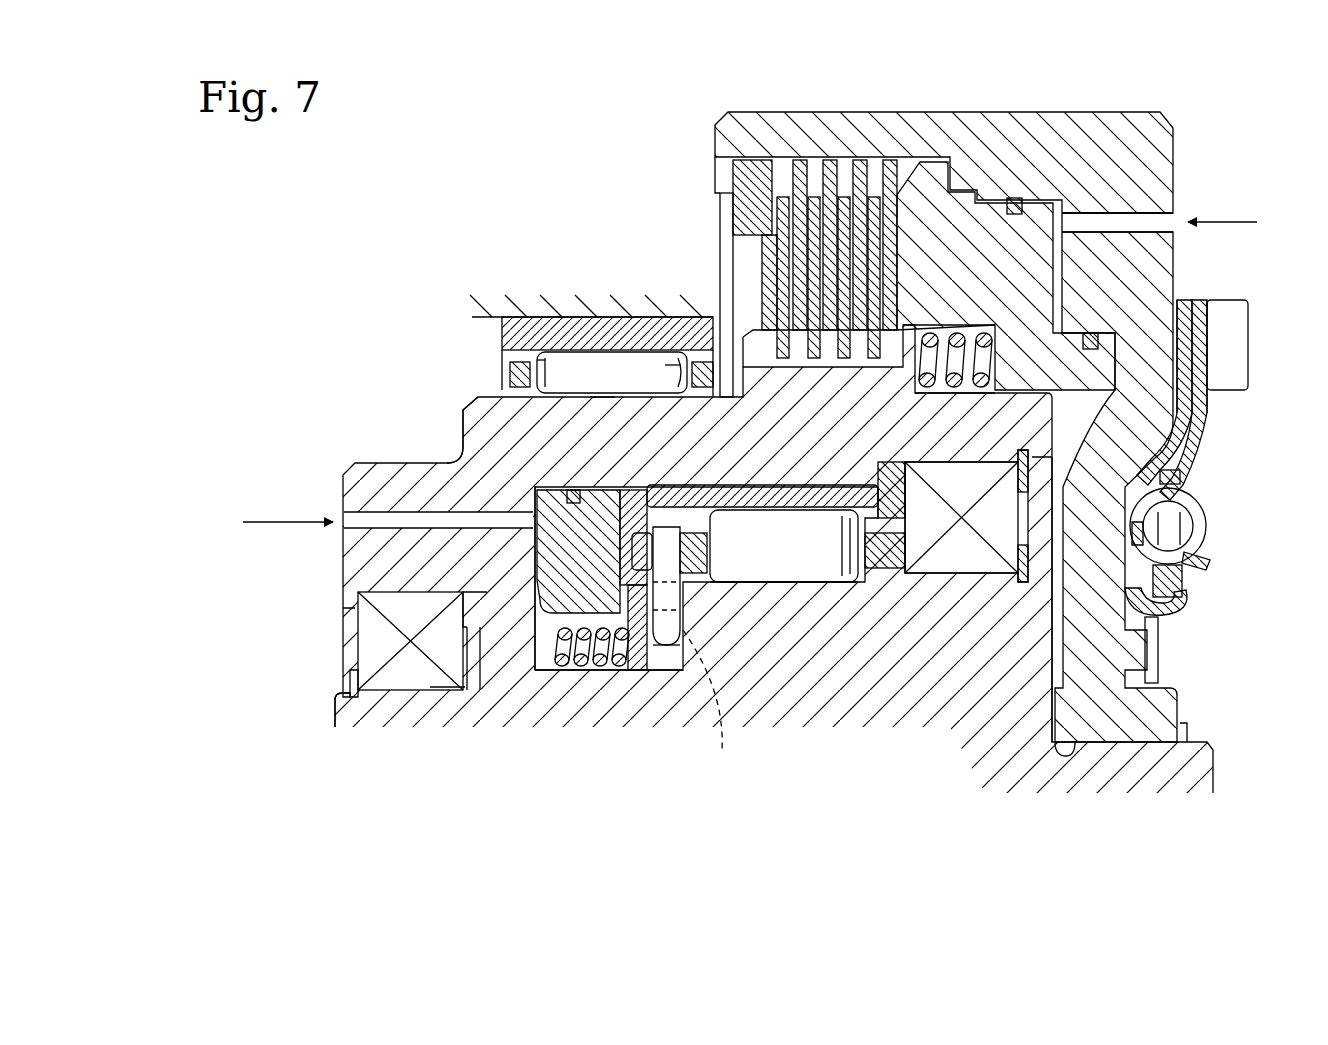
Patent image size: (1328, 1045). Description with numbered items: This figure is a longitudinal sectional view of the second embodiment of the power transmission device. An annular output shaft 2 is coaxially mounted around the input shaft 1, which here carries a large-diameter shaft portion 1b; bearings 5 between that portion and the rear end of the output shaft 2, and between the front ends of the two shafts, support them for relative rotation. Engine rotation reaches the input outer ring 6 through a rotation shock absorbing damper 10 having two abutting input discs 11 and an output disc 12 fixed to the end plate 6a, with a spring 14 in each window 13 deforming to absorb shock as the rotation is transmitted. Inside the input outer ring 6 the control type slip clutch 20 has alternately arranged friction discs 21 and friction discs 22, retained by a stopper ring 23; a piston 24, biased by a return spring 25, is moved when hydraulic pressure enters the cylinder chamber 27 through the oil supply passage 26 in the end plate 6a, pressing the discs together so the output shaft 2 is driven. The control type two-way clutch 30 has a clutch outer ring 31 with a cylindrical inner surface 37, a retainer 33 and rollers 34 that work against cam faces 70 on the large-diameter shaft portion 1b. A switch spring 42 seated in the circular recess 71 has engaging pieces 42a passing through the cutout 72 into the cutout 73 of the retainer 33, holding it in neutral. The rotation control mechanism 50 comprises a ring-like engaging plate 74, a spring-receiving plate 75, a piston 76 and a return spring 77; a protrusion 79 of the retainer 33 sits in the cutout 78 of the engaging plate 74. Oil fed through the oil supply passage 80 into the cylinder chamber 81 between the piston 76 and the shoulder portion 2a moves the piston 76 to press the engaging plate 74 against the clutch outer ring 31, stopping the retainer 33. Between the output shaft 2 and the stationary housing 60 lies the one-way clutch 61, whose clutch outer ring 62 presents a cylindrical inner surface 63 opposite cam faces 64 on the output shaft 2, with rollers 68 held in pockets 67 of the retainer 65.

The input shaft 1 is at (350, 714).
The large-diameter shaft portion 1b is at (877, 567).
The output shaft 2 is at (345, 485).
The shoulder portion 2a is at (525, 615).
The bearings 5 is at (370, 642).
The input outer ring 6 is at (905, 122).
The end plate 6a is at (1160, 272).
The rotation shock absorbing damper 10 is at (1207, 472).
The input discs 11 is at (1195, 448).
The output disc 12 is at (1170, 608).
The windows 13 is at (1180, 562).
The spring 14 is at (1205, 527).
The control type slip clutch 20 is at (805, 140).
The friction discs 21 is at (768, 168).
The friction discs 22 is at (845, 200).
The stopper ring 23 is at (743, 178).
The piston 24 is at (957, 335).
The return spring 25 is at (990, 232).
The oil supply passage 26 is at (1112, 222).
The cylinder chamber 27 is at (1060, 200).
The control type two-way clutch 30 is at (902, 580).
The clutch outer ring 31 is at (802, 500).
The retainer 33 is at (890, 540).
The rollers 34 is at (817, 565).
The cylindrical inner surface 37 is at (840, 520).
The switch spring 42 is at (660, 655).
The engaging pieces 42a is at (667, 535).
The rotation control mechanism 50 is at (470, 660).
The housing 60 is at (493, 305).
The one-way clutch 61 is at (512, 312).
The clutch outer ring 62 is at (537, 330).
The cylindrical inner surface 63 is at (575, 358).
The cam faces 64 is at (603, 392).
The retainer 65 is at (705, 350).
The pockets 67 is at (672, 365).
The rollers 68 is at (638, 360).
The cam faces 70 is at (780, 575).
The circular recess 71 is at (672, 660).
The cutout 72 is at (711, 709).
The cutout 73 is at (732, 520).
The engaging plate 74 is at (633, 505).
The spring-receiving plate 75 is at (633, 660).
The piston 76 is at (578, 655).
The return spring 77 is at (605, 655).
The cutout 78 is at (600, 500).
The protrusion 79 is at (642, 540).
The oil supply passage 80 is at (355, 522).
The cylinder chamber 81 is at (530, 525).